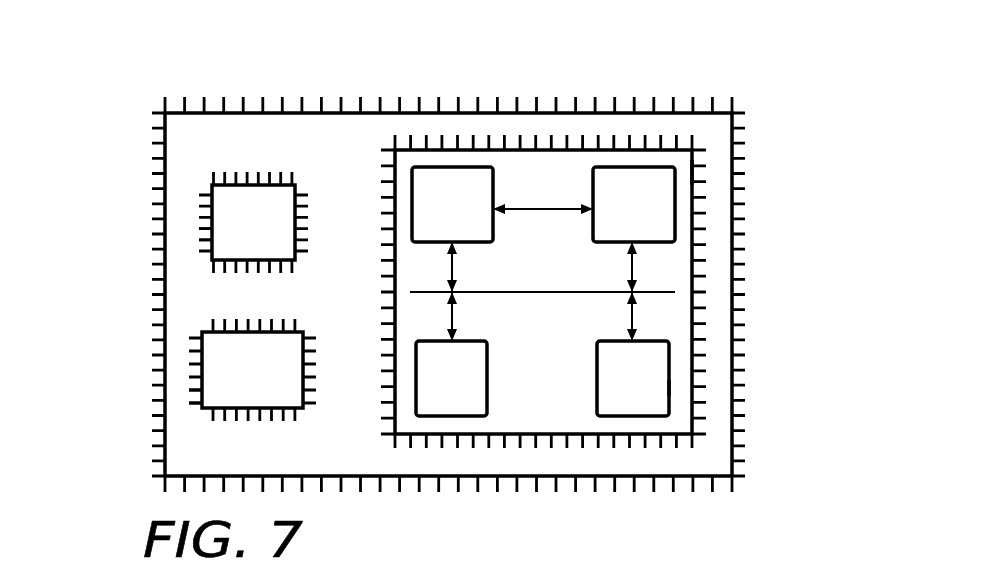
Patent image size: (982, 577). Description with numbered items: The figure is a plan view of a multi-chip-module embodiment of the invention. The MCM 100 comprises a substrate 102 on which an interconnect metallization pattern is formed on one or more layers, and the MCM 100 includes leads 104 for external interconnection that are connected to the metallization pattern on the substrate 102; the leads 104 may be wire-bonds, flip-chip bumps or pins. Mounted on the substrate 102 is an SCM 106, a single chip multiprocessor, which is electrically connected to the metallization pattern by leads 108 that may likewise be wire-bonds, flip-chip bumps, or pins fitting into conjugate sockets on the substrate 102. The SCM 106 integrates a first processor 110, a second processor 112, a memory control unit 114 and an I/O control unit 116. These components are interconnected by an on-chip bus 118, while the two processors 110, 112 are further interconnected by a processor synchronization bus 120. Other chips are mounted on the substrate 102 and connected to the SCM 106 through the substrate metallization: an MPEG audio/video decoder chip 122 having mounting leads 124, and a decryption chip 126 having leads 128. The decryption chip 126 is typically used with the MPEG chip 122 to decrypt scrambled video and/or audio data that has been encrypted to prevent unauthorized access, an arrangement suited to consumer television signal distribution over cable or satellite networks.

The multi-chip-module 100 is at (195, 84).
The substrate 102 is at (708, 125).
The leads 104 is at (738, 340).
The SCM 106 is at (670, 388).
The leads 108 is at (693, 165).
The first processor 110 is at (460, 167).
The second processor 112 is at (675, 217).
The memory control unit 114 is at (488, 380).
The I/O control unit 116 is at (598, 400).
The on-chip bus 118 is at (580, 293).
The processor synchronization bus 120 is at (520, 207).
The MPEG audio/video decoder chip 122 is at (263, 183).
The mounting leads 124 is at (209, 239).
The decryption chip 126 is at (212, 343).
The leads 128 is at (194, 386).